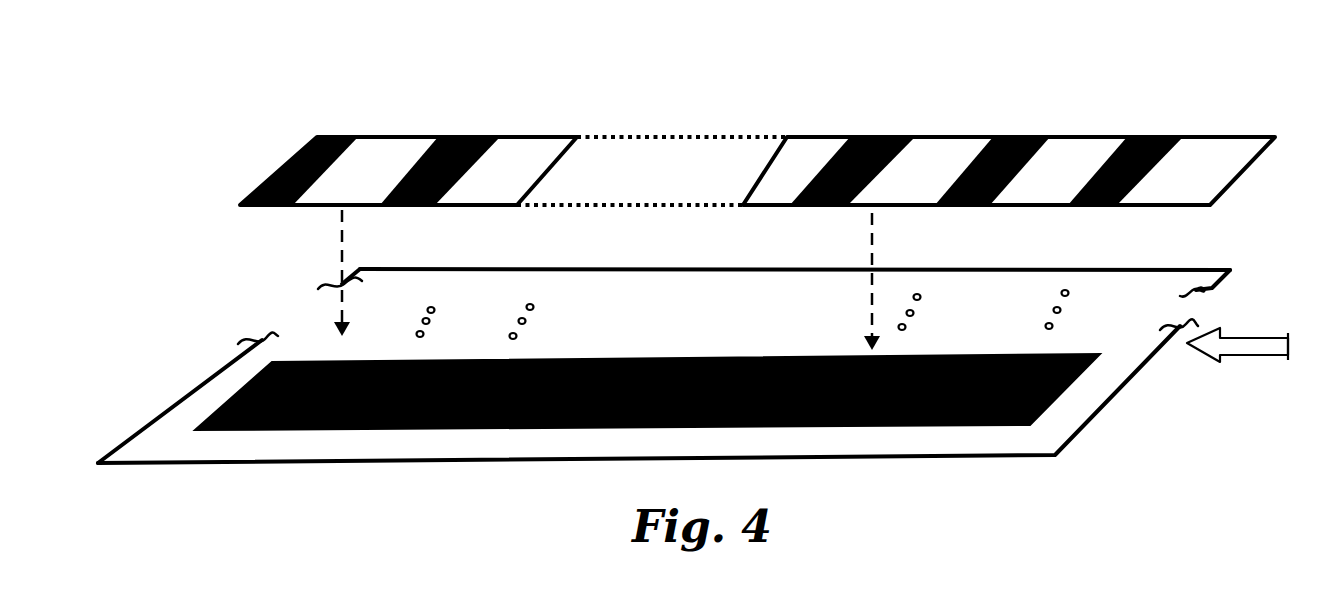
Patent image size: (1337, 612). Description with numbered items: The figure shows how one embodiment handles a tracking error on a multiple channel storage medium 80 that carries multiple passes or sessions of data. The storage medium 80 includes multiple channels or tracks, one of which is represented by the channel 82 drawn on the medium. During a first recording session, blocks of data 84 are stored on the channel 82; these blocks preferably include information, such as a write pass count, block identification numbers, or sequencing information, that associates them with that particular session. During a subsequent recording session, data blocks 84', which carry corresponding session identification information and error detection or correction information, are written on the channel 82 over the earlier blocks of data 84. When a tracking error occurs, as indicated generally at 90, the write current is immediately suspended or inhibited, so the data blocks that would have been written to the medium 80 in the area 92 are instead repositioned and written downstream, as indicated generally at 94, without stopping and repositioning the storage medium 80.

The storage medium 80 is at (1133, 382).
The channel 82 is at (1068, 404).
The blocks of data 84 is at (621, 446).
The data blocks 84' is at (757, 194).
The tracking error 90 is at (572, 128).
The area 92 is at (668, 128).
The downstream area 94 is at (925, 118).